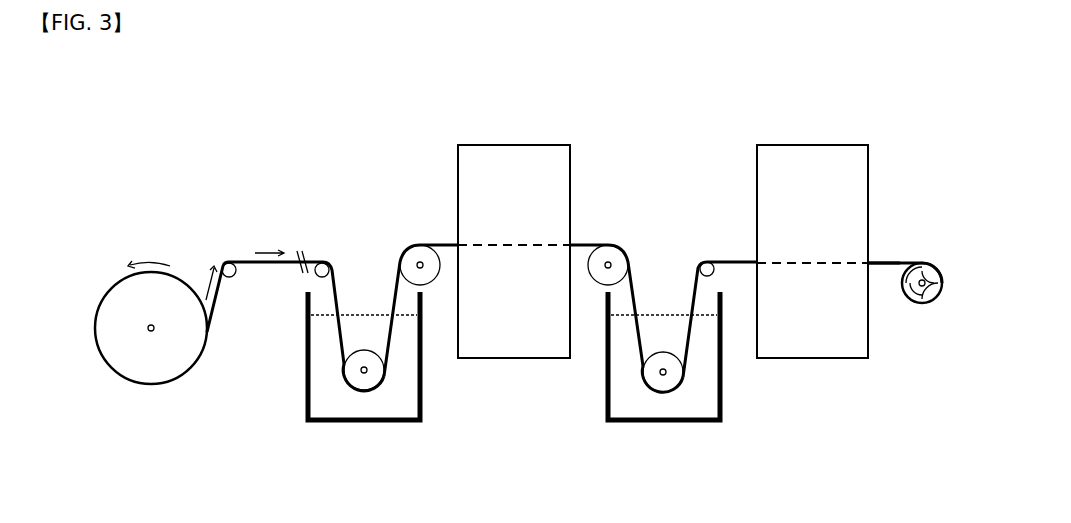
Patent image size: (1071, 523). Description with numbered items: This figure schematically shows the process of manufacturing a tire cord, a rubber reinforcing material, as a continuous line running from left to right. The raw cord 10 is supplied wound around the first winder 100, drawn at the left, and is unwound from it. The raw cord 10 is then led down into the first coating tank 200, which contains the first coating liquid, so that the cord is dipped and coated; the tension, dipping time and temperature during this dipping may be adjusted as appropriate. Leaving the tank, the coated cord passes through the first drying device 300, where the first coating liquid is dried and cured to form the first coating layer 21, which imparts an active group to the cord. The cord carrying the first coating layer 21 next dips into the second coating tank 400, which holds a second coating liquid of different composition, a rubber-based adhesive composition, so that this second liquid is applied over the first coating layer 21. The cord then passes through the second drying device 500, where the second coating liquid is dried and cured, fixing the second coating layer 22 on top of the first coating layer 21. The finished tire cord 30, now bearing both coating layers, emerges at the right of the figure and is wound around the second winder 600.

The raw cord 10 is at (242, 258).
The first coating layer 21 is at (337, 398).
The second coating layer 22 is at (634, 410).
The tire cord 30 is at (893, 262).
The first winder 100 is at (152, 388).
The first coating tank 200 is at (389, 423).
The first drying device 300 is at (533, 145).
The second coating tank 400 is at (690, 422).
The second drying device 500 is at (830, 145).
The second winder 600 is at (923, 304).